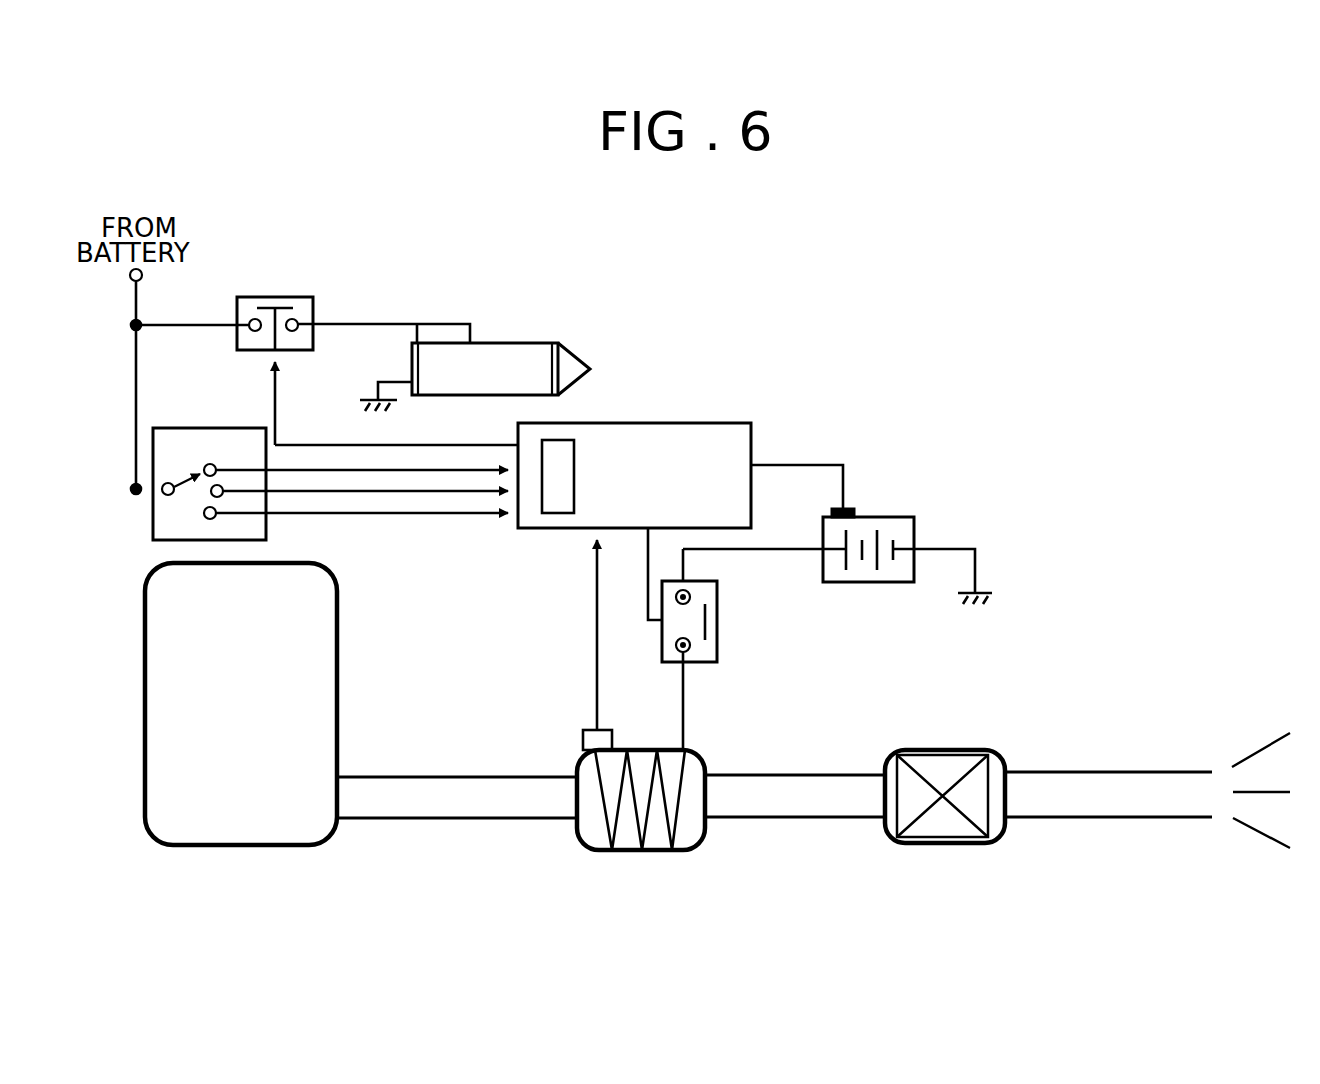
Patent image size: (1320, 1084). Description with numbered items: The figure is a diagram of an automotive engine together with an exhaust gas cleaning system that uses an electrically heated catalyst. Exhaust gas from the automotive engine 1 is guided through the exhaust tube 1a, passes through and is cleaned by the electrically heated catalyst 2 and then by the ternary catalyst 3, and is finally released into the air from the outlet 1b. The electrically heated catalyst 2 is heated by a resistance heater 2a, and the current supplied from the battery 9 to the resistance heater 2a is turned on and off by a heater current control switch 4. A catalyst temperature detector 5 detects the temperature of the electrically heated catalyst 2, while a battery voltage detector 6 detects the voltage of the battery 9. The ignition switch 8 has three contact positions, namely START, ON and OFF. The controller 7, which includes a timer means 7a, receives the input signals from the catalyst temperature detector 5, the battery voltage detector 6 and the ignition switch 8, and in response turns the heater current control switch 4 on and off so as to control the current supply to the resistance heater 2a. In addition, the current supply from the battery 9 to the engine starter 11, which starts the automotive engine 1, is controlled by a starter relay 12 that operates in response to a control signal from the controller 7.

The automotive engine 1 is at (338, 652).
The exhaust tube 1a is at (470, 819).
The outlet 1b is at (1213, 819).
The electrically heated catalyst 2 is at (672, 794).
The resistance heater 2a is at (677, 813).
The ternary catalyst 3 is at (963, 752).
The heater current control switch 4 is at (717, 642).
The catalyst temperature detector 5 is at (583, 740).
The battery voltage detector 6 is at (848, 510).
The controller 7 is at (656, 515).
The timer means 7a is at (563, 513).
The ignition switch 8 is at (214, 428).
The battery 9 is at (893, 523).
The engine starter 11 is at (524, 344).
The starter relay 12 is at (313, 298).